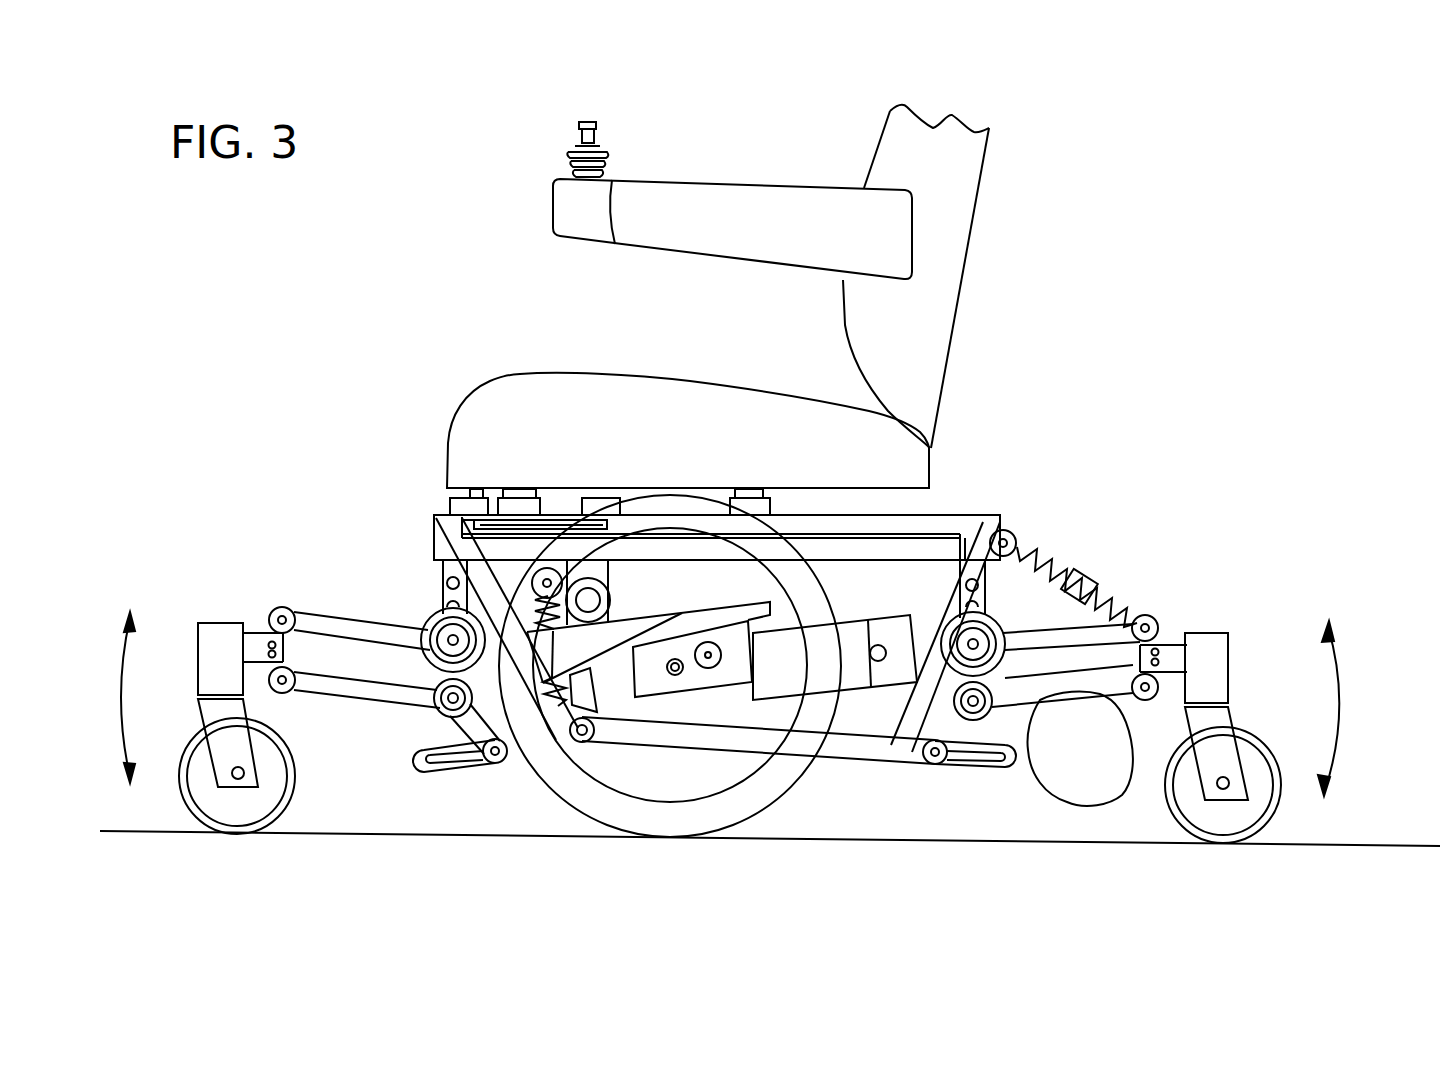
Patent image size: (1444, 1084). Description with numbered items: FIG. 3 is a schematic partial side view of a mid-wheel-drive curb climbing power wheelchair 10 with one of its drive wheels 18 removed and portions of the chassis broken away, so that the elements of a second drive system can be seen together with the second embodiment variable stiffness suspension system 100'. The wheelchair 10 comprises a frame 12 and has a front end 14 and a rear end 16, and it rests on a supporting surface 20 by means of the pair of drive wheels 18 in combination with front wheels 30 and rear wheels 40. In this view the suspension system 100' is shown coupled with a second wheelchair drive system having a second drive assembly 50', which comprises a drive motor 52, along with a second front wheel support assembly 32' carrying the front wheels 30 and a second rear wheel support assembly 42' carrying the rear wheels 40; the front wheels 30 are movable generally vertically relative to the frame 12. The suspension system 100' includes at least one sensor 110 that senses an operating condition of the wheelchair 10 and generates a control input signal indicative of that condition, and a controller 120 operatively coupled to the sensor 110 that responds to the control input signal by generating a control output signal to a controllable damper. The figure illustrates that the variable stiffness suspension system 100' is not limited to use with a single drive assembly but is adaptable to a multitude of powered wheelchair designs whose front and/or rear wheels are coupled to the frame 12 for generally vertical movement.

The wheelchair 10 is at (1004, 324).
The frame 12 is at (975, 515).
The front end 14 is at (393, 578).
The rear end 16 is at (1283, 701).
The drive wheels 18 is at (792, 790).
The supporting surface 20 is at (946, 841).
The front wheels 30 is at (295, 797).
The second front wheel support assembly 32' is at (364, 684).
The rear wheels 40 is at (1275, 816).
The second rear wheel support assembly 42' is at (1064, 709).
The second drive assembly 50' is at (725, 734).
The drive motor 52 is at (855, 637).
The second embodiment variable stiffness suspension system 100' is at (761, 661).
The sensor 110 is at (600, 486).
The controller 120 is at (468, 488).